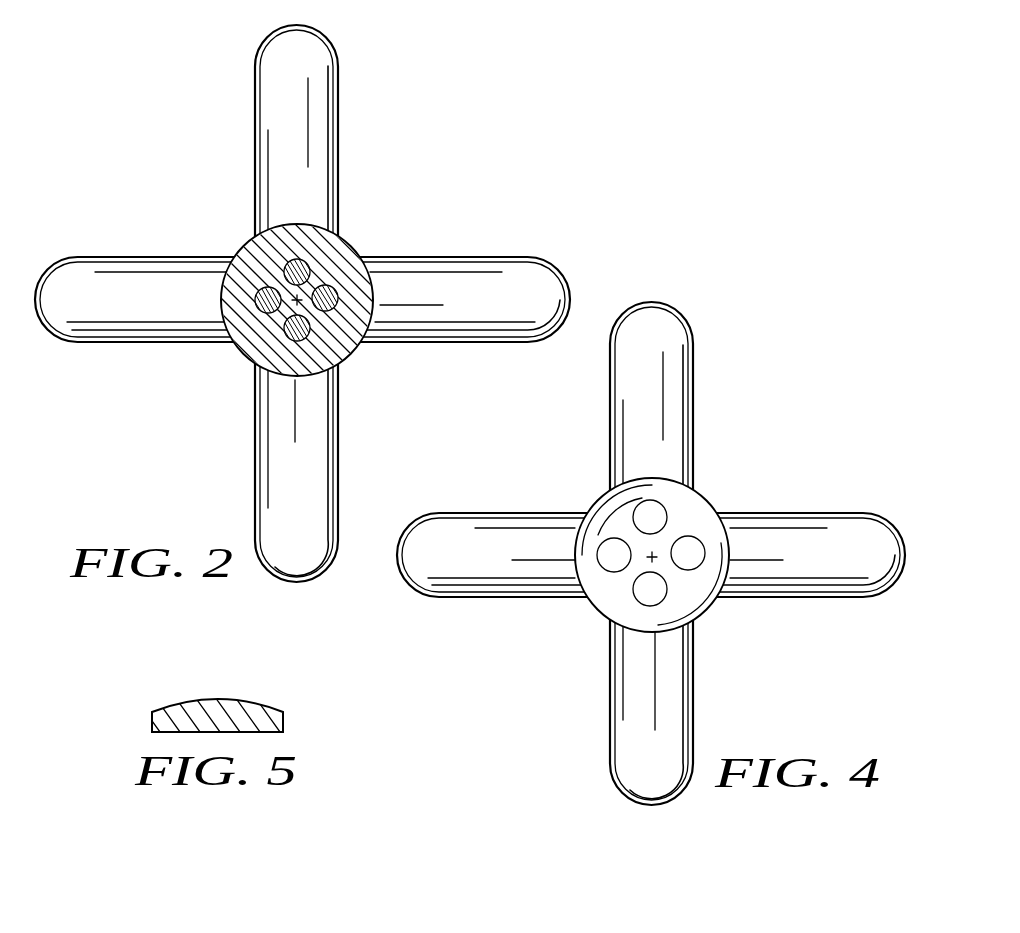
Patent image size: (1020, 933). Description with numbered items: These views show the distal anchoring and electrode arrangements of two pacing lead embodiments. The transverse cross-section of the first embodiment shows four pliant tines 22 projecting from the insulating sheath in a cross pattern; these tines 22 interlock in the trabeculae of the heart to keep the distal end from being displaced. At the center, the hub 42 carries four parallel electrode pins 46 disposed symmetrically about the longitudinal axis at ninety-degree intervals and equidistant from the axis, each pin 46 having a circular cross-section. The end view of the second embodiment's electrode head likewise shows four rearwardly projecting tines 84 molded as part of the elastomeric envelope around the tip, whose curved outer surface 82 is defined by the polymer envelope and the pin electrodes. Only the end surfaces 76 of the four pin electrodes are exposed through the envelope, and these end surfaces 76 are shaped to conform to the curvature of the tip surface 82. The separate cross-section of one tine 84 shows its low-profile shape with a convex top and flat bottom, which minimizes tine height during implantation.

In FIG. 2, the pliant tines 22 is at (330, 80).
In FIG. 2, the central hub 42 is at (337, 343).
In FIG. 2, the electrode pins 46 is at (310, 272).
In FIG. 4, the end surface 76 is at (658, 515).
In FIG. 4, the curved outer surface 82 is at (598, 508).
In FIG. 4, the tines 84 is at (690, 404).
In FIG. 5, the tines 84 is at (208, 698).